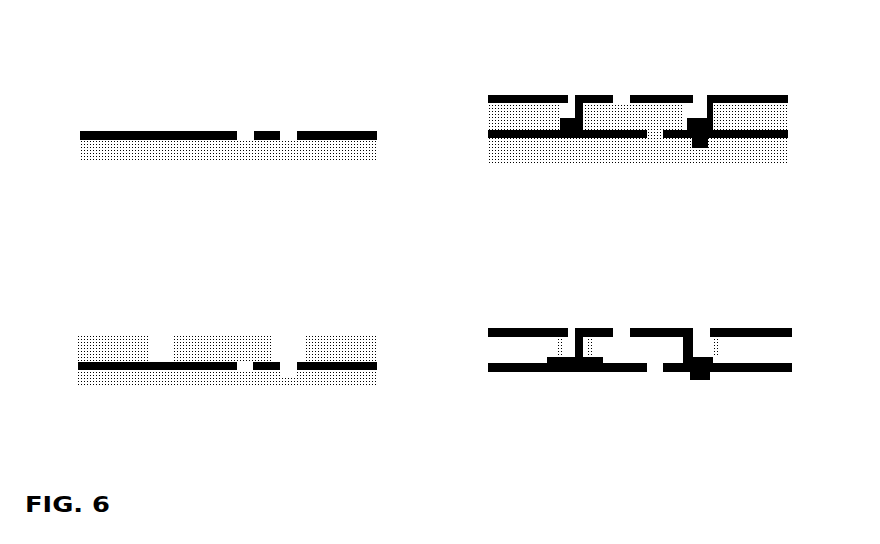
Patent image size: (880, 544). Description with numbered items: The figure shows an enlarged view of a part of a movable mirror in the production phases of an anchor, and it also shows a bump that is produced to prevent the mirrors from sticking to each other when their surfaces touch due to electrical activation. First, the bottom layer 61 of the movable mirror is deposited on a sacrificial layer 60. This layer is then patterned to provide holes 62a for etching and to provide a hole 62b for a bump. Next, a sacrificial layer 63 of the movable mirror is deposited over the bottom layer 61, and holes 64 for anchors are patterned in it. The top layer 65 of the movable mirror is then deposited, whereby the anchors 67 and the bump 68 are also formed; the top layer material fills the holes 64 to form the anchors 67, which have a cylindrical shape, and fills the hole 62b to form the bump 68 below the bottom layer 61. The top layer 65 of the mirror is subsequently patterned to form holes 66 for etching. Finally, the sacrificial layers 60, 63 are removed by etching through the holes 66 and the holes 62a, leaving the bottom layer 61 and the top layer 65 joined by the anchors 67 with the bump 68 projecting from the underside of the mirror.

The sacrificial layer 60 is at (235, 163).
The bottom layer 61 is at (160, 131).
The holes for etching 62a is at (247, 128).
The hole for a bump 62b is at (288, 128).
The sacrificial layer of the movable mirror 63 is at (105, 343).
The holes for anchors 64 is at (285, 332).
The top layer 65 is at (667, 95).
The holes for etching 66 is at (620, 93).
The anchor 67 is at (558, 112).
The bump 68 is at (690, 142).